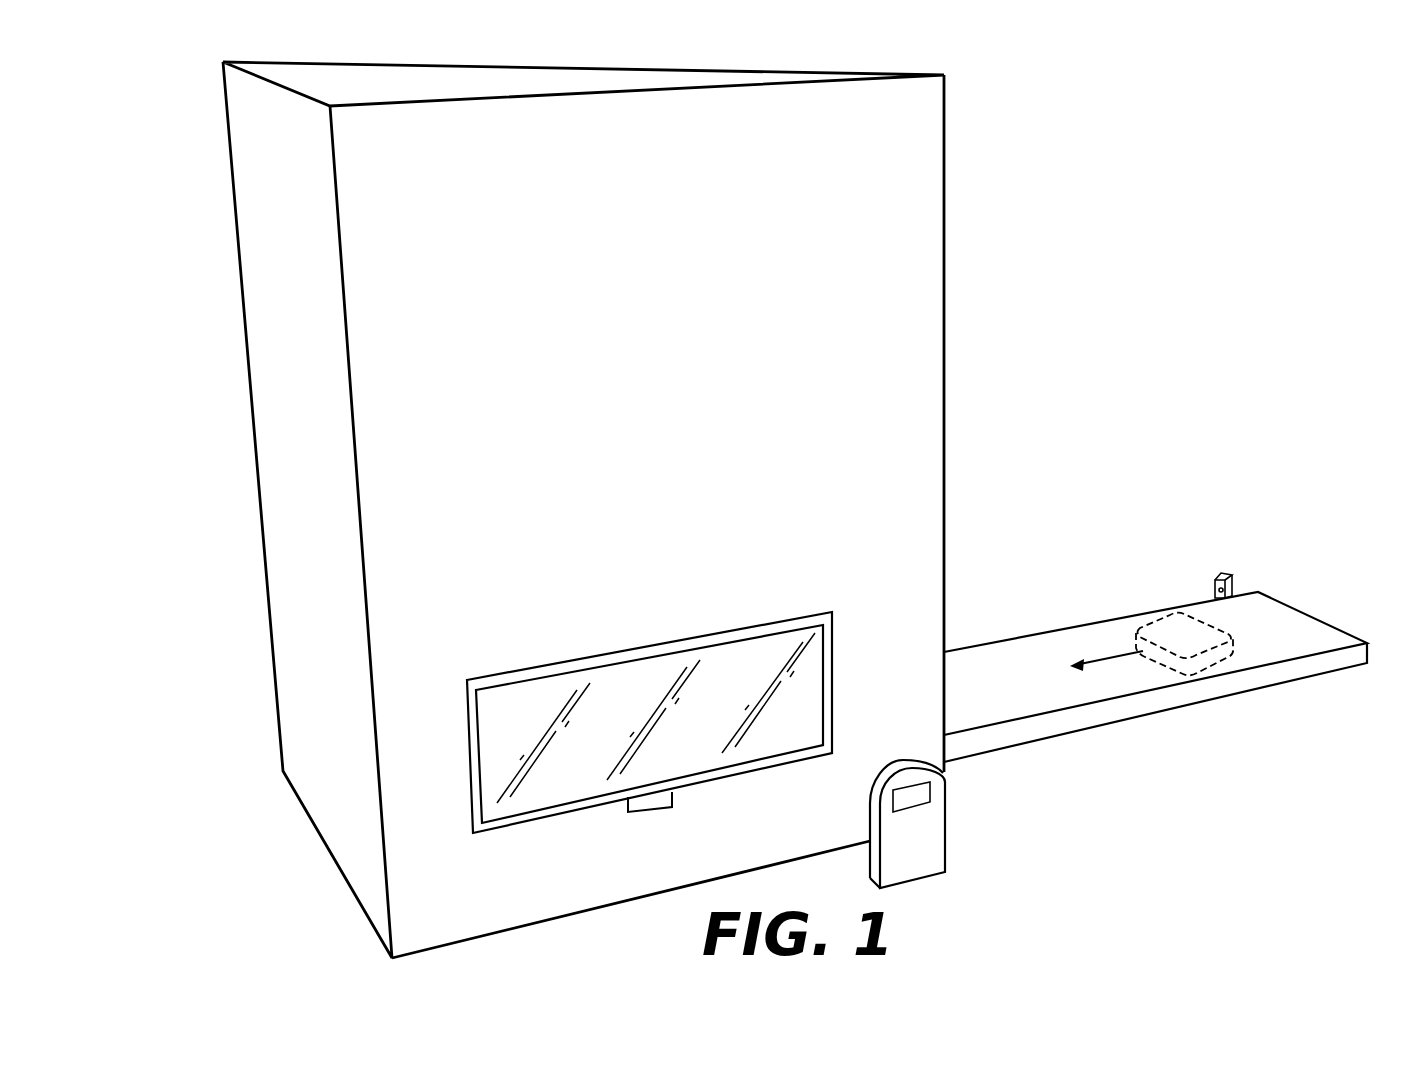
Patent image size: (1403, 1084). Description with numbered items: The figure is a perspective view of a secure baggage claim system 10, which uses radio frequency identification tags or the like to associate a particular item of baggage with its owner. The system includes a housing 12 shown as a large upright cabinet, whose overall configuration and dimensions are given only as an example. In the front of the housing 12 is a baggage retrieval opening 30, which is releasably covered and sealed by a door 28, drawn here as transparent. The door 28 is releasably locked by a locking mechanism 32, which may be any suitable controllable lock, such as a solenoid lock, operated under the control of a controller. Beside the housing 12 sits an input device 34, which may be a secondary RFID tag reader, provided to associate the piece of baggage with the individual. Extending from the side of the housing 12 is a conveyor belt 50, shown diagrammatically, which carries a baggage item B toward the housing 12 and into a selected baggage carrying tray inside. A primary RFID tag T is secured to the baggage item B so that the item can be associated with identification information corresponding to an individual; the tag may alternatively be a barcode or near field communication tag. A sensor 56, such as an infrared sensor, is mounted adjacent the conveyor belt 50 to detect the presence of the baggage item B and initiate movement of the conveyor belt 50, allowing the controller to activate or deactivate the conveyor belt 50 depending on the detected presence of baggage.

The secure baggage claim system 10 is at (224, 329).
The housing 12 is at (944, 207).
The door 28 is at (763, 751).
The baggage retrieval opening 30 is at (550, 642).
The locking mechanism 32 is at (656, 798).
The input device 34 is at (917, 848).
The conveyor belt 50 is at (1032, 707).
The sensor 56 is at (1232, 580).
The baggage item B is at (1203, 641).
The primary RFID tag T is at (1172, 610).